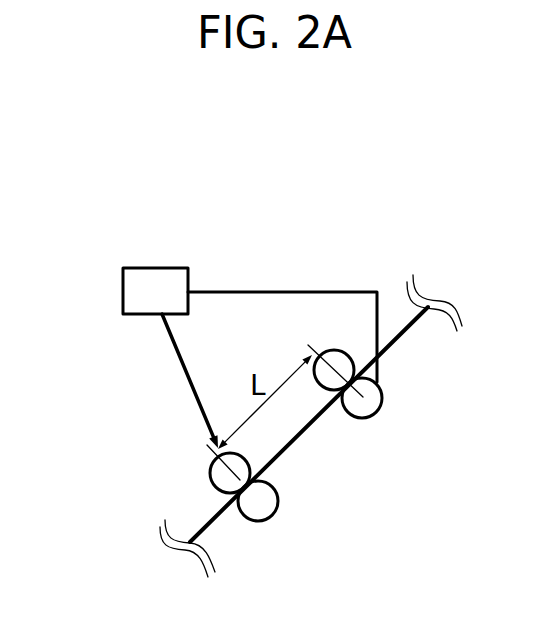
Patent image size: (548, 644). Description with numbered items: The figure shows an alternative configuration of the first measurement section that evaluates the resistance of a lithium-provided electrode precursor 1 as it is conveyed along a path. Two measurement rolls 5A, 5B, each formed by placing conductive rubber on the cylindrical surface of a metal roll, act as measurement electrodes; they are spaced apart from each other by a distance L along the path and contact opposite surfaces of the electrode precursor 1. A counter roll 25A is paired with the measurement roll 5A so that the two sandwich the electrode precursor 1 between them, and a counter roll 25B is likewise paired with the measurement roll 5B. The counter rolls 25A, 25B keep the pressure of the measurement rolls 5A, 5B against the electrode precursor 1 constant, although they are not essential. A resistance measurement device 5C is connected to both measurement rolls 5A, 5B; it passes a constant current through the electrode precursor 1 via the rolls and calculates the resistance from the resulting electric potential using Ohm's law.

The electrode precursor 1 is at (208, 520).
The measurement roll 5A is at (373, 414).
The measurement roll 5B is at (213, 460).
The resistance measurement device 5C is at (123, 283).
The counter roll 25A is at (336, 350).
The counter roll 25B is at (268, 518).